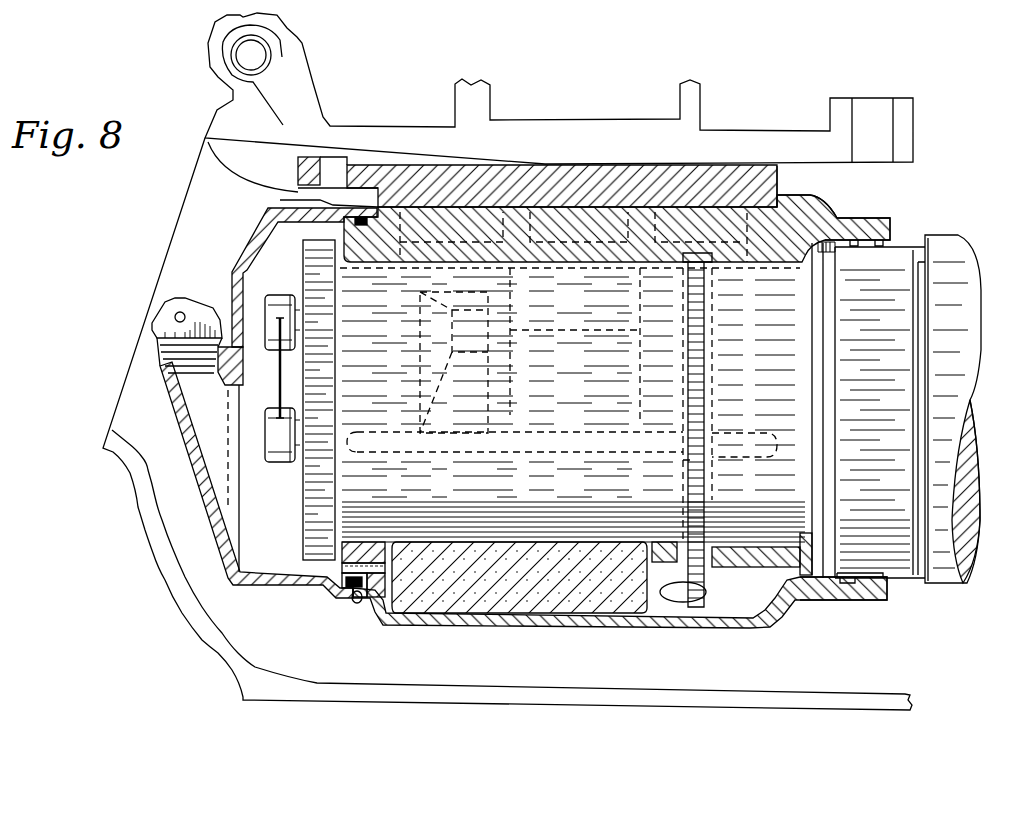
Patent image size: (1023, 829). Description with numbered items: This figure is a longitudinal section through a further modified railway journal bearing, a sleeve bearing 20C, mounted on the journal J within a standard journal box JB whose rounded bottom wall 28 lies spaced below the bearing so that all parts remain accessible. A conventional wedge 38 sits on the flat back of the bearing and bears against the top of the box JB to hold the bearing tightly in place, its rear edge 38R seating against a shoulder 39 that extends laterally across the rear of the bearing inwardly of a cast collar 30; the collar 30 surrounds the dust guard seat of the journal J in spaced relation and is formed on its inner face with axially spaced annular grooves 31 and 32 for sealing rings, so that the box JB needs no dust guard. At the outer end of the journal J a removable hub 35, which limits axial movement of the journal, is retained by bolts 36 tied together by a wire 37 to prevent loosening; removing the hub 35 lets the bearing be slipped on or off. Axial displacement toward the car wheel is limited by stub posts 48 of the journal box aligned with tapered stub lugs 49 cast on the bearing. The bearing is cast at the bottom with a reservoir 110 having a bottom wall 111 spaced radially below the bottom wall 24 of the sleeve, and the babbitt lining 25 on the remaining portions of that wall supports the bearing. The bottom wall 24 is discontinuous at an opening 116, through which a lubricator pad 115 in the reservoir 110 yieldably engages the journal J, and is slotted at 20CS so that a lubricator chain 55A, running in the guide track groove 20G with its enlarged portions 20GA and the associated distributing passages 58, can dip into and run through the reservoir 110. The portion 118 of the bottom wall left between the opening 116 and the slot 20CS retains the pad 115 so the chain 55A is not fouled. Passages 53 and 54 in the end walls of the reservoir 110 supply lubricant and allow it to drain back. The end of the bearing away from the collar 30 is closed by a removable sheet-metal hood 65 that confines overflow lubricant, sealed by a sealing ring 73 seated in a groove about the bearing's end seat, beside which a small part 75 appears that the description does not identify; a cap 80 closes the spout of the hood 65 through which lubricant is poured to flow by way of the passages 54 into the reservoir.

The journal box JB is at (539, 110).
The wedge 38 is at (560, 182).
The rear edge of the wedge 38R is at (777, 178).
The shoulder 39 is at (800, 198).
The collar 30 is at (870, 222).
The annular groove 31 is at (878, 249).
The journal J is at (950, 440).
The hood 65 is at (245, 250).
The cap 80 is at (160, 325).
The wire 37 is at (283, 370).
The bolts 36 is at (277, 447).
The removable hub 35 is at (303, 505).
The tapered stub lugs 49 is at (505, 392).
The stub columns 48 is at (654, 344).
The groove 20G is at (695, 282).
The lubricator chain 55A is at (706, 392).
The distributing passages 58 is at (555, 432).
The enlarged portions of the groove 20GA is at (685, 465).
The slot 20CS is at (692, 515).
The babbitt lining 25 is at (350, 542).
The bottom wall of the sleeve 24 is at (378, 542).
The opening 116 is at (625, 540).
The lubricator pad 115 is at (542, 589).
The portion of the bottom wall 118 is at (660, 588).
The passage 54 is at (350, 570).
The sealing ring 73 is at (350, 590).
The washer 75 is at (358, 605).
The bottom wall of the reservoir 111 is at (553, 622).
The reservoir 110 is at (716, 604).
The passage 53 is at (787, 592).
The sleeve bearing 20C is at (820, 604).
The annular groove 32 is at (857, 572).
The rounded bottom wall 28 is at (212, 651).